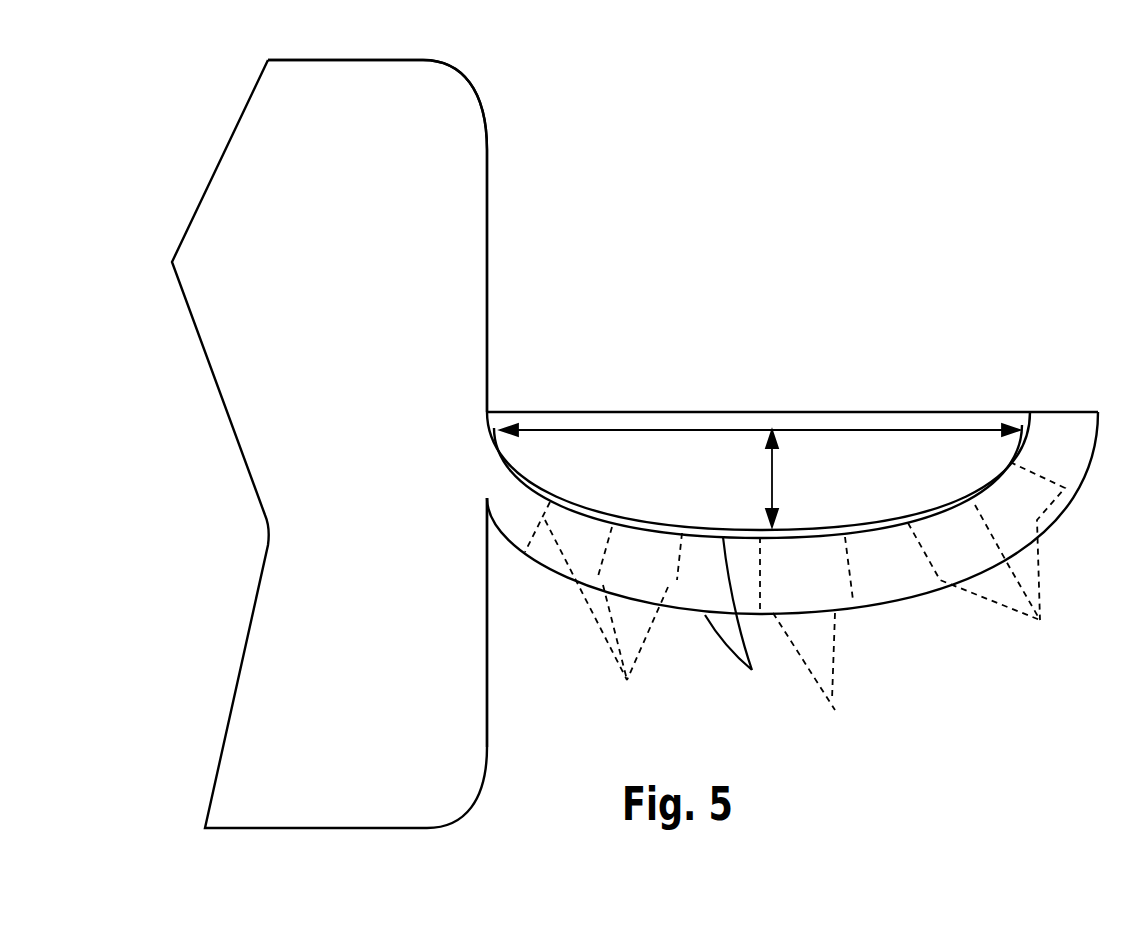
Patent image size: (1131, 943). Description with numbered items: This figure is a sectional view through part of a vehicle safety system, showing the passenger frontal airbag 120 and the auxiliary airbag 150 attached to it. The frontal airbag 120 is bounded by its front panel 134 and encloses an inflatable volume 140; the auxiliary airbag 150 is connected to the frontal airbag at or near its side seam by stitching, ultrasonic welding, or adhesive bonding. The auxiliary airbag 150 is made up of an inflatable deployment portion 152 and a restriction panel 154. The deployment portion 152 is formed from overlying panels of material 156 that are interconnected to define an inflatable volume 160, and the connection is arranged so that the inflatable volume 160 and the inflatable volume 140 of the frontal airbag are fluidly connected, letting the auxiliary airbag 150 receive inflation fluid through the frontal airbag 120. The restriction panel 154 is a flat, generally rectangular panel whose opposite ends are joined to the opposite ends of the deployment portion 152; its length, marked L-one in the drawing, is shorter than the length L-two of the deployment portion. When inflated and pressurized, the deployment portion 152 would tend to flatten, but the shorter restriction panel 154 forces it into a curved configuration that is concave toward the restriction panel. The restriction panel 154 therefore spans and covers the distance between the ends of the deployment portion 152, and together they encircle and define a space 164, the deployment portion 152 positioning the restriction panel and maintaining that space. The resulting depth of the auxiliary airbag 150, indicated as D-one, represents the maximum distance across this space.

The passenger frontal airbag 120 is at (273, 230).
The front panel 134 is at (397, 92).
The inflatable volume of the frontal airbag 140 is at (422, 448).
The auxiliary airbag 150 is at (792, 463).
The inflatable deployment portion 152 is at (885, 575).
The restriction panel 154 is at (713, 412).
The overlying panels of material 156 is at (796, 604).
The inflatable volume of the auxiliary airbag 160 is at (806, 575).
The space 164 is at (758, 475).